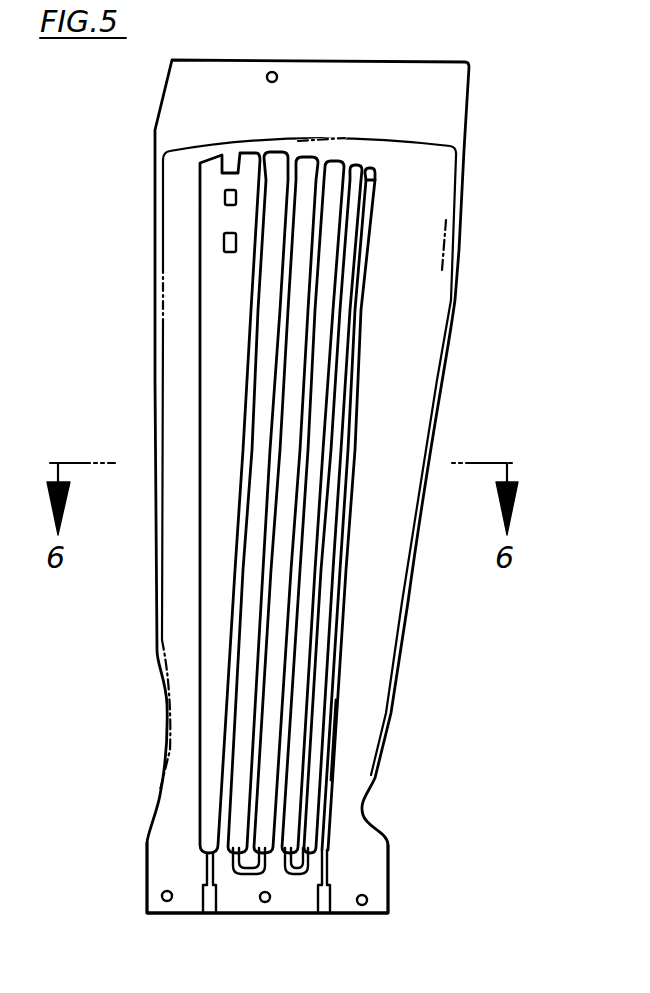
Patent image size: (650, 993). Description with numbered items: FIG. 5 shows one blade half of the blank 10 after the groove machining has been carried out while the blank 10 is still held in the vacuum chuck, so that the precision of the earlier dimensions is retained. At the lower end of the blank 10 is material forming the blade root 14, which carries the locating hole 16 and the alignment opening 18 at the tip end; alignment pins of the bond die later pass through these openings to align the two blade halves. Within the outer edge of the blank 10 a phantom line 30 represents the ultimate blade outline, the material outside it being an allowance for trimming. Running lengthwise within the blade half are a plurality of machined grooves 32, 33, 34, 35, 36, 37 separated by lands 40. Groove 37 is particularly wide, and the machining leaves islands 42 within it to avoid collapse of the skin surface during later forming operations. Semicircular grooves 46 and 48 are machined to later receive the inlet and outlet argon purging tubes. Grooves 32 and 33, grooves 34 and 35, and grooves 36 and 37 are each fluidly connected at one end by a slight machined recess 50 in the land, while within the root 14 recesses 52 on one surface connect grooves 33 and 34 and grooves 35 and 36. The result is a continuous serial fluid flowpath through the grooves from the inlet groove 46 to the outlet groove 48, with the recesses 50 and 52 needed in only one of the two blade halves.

The blank 10 is at (463, 233).
The blade root 14 is at (372, 873).
The hole 16 is at (267, 903).
The alignment opening 18 is at (276, 74).
The phantom line 30 is at (443, 138).
The groove 32 is at (355, 417).
The groove 33 is at (340, 387).
The groove 34 is at (320, 357).
The groove 35 is at (298, 322).
The groove 36 is at (272, 293).
The groove 37 is at (215, 356).
The lands 40 is at (331, 750).
The islands 42 is at (225, 200).
The semicircular groove 46 is at (324, 913).
The semicircular groove 48 is at (210, 913).
The machined recess 50 is at (374, 189).
The recesses 52 is at (248, 876).